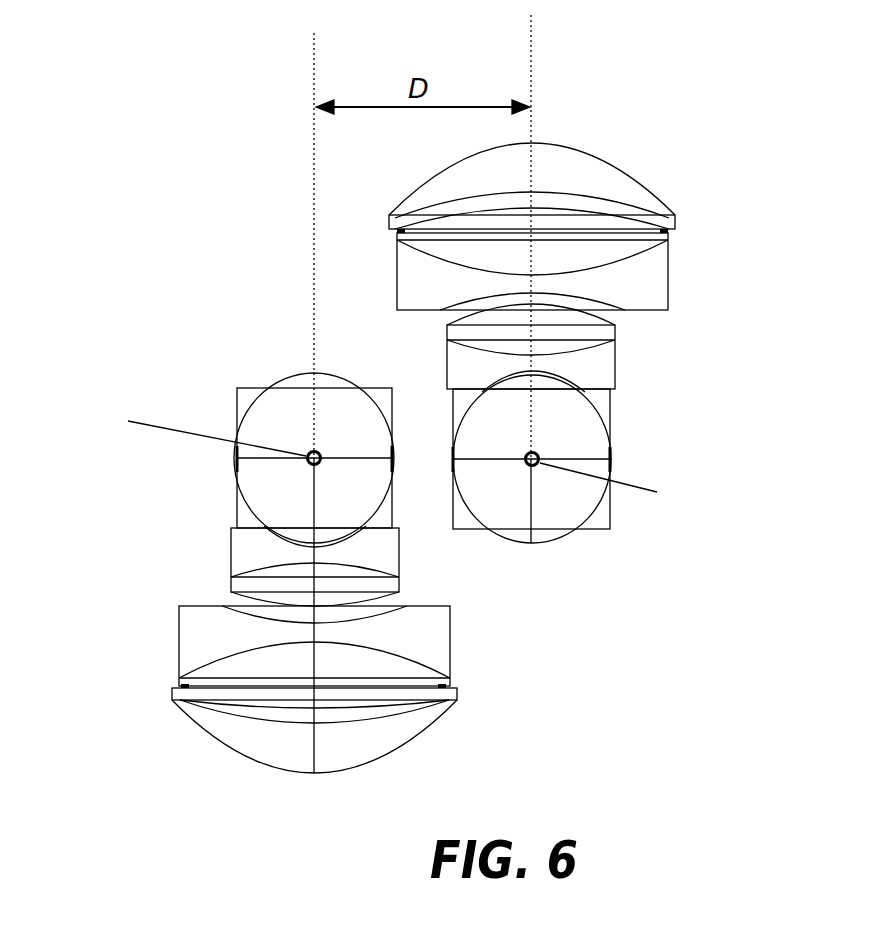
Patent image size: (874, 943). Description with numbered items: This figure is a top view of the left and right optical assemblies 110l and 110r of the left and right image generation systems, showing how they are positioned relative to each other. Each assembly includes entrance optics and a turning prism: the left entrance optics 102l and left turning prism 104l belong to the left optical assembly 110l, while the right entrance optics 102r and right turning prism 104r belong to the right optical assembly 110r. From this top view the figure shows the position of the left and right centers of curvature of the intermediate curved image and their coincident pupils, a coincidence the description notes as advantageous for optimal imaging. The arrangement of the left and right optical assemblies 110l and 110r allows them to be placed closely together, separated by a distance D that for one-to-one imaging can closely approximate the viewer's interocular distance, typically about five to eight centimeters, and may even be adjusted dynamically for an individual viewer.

The left entrance optics 102l is at (673, 223).
The right entrance optics 102r is at (282, 772).
The left turning prism 104l is at (593, 532).
The right turning prism 104r is at (238, 498).
The left optical assembly 110l is at (768, 539).
The right optical assembly 110r is at (156, 719).